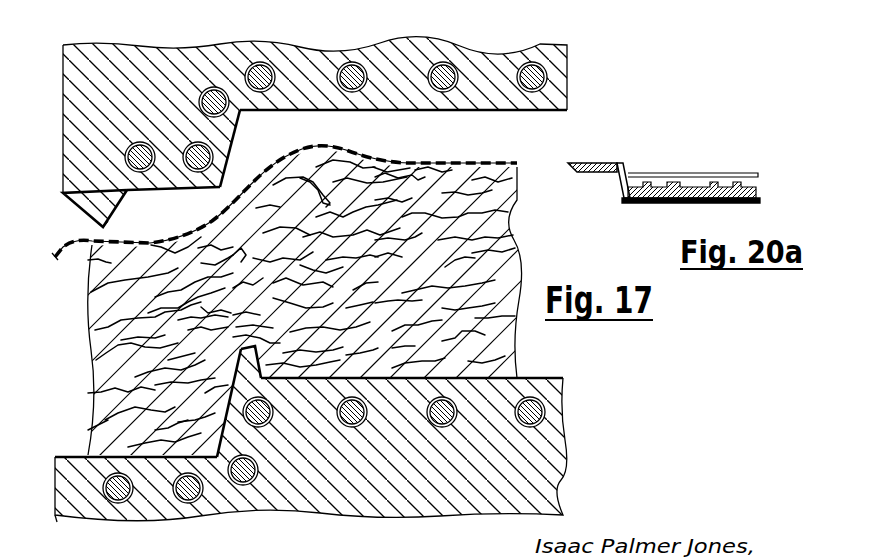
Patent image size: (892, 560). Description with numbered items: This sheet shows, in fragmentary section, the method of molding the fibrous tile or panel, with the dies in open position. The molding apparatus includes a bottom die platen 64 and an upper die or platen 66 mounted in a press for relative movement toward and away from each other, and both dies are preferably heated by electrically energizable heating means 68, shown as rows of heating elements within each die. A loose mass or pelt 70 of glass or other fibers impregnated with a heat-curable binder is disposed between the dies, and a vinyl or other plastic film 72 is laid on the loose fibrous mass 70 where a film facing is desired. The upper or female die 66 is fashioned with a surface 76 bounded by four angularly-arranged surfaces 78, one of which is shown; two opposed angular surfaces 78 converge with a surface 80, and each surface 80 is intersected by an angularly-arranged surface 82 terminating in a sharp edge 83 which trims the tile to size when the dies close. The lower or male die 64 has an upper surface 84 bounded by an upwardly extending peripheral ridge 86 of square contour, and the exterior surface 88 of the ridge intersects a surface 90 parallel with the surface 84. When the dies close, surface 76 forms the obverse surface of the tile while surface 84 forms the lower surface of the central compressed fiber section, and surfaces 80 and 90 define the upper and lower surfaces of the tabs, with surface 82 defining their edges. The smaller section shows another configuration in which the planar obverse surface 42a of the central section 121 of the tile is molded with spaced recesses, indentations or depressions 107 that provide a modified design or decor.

In FIG. 17, the bottom die platen 64 is at (559, 380).
In FIG. 17, the upper die or platen 66 is at (535, 112).
In FIG. 17, the electrically energizable heating means 68 is at (220, 92).
In FIG. 17, the loose mass or pelt 70 is at (505, 240).
In FIG. 17, the plastic film 72 is at (400, 161).
In FIG. 17, the surface 76 is at (424, 112).
In FIG. 17, the angularly-arranged surfaces 78 is at (236, 137).
In FIG. 17, the surface 80 is at (173, 190).
In FIG. 17, the angularly-arranged surface 82 is at (117, 209).
In FIG. 17, the sharp edge 83 is at (103, 227).
In FIG. 17, the upper surface 84 is at (525, 377).
In FIG. 17, the peripheral ridge 86 is at (246, 355).
In FIG. 17, the exterior surface 88 is at (220, 435).
In FIG. 17, the surface 90 is at (117, 453).
In FIG. 20a, the recesses 107 is at (634, 202).
In FIG. 20a, the cover strip 121 is at (775, 157).
In FIG. 20a, the planar obverse surface 42a is at (690, 203).